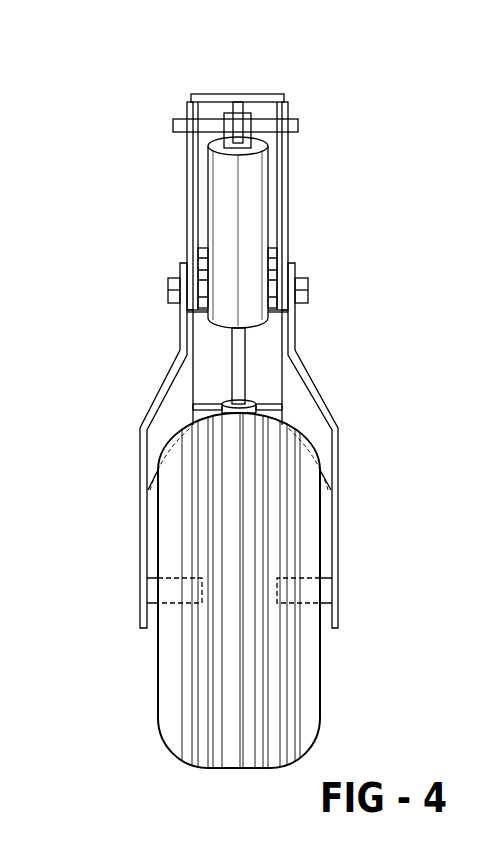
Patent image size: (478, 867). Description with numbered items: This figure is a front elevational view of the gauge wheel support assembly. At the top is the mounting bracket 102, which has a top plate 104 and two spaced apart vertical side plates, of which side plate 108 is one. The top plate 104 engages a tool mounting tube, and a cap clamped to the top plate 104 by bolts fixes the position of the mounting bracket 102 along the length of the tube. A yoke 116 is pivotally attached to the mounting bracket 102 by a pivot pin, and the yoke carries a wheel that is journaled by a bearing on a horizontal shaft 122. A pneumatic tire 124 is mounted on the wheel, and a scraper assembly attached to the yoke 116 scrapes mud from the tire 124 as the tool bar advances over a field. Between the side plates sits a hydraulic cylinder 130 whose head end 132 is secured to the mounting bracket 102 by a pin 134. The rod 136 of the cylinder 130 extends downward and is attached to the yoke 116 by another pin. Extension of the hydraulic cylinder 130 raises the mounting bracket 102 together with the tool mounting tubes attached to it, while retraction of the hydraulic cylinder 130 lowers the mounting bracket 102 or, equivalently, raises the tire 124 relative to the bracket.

The mounting bracket 102 is at (365, 118).
The top plate 104 is at (208, 94).
The vertical side plate 108 is at (289, 192).
The yoke 116 is at (163, 382).
The horizontal shaft 122 is at (141, 590).
The pneumatic tire 124 is at (162, 727).
The hydraulic cylinder 130 is at (256, 222).
The head end 132 is at (252, 142).
The pin 134 is at (174, 126).
The rod 136 is at (240, 358).